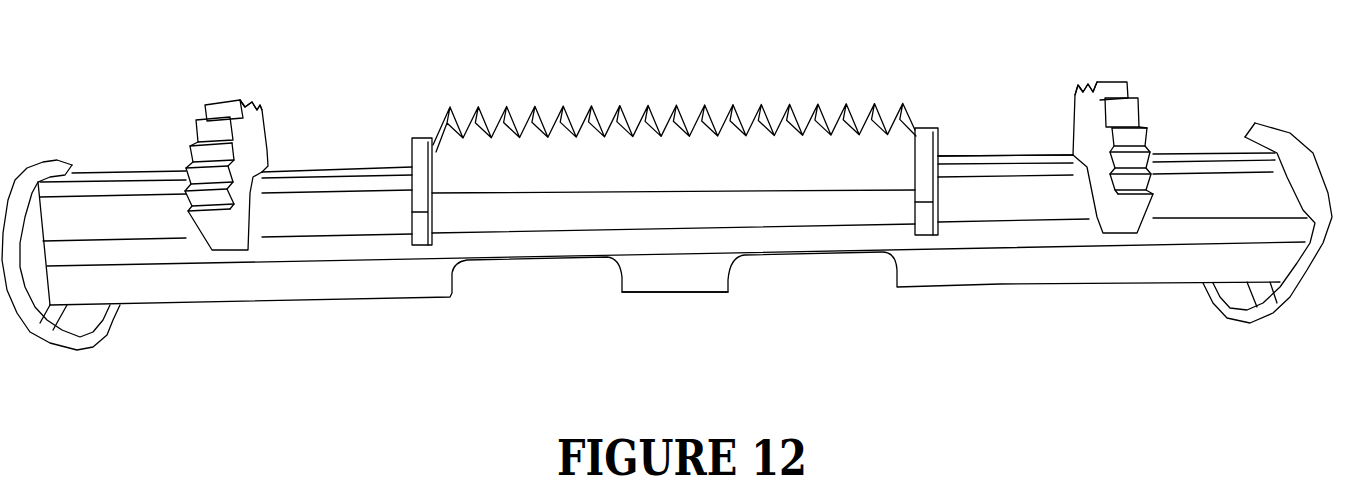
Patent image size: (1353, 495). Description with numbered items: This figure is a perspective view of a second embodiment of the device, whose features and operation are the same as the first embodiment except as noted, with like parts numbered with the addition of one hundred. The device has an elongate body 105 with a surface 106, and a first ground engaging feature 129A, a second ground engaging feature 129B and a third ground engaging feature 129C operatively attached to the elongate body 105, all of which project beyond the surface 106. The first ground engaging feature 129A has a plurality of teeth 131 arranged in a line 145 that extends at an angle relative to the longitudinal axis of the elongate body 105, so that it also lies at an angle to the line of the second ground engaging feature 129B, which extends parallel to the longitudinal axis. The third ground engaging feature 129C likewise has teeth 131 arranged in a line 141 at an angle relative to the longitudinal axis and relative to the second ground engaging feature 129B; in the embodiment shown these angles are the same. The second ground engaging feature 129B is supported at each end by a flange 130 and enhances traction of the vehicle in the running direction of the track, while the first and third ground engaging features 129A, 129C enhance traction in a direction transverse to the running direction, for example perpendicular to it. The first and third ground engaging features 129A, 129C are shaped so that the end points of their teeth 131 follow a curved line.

The elongate body 105 is at (996, 273).
The surface 106 is at (997, 163).
The first ground engaging feature 129A is at (224, 248).
The second ground engaging feature 129B is at (648, 183).
The third ground engaging feature 129C is at (1123, 217).
The flange 130 is at (415, 152).
The teeth 131 is at (190, 146).
The line 145 is at (235, 492).
The line 141 is at (1238, 488).